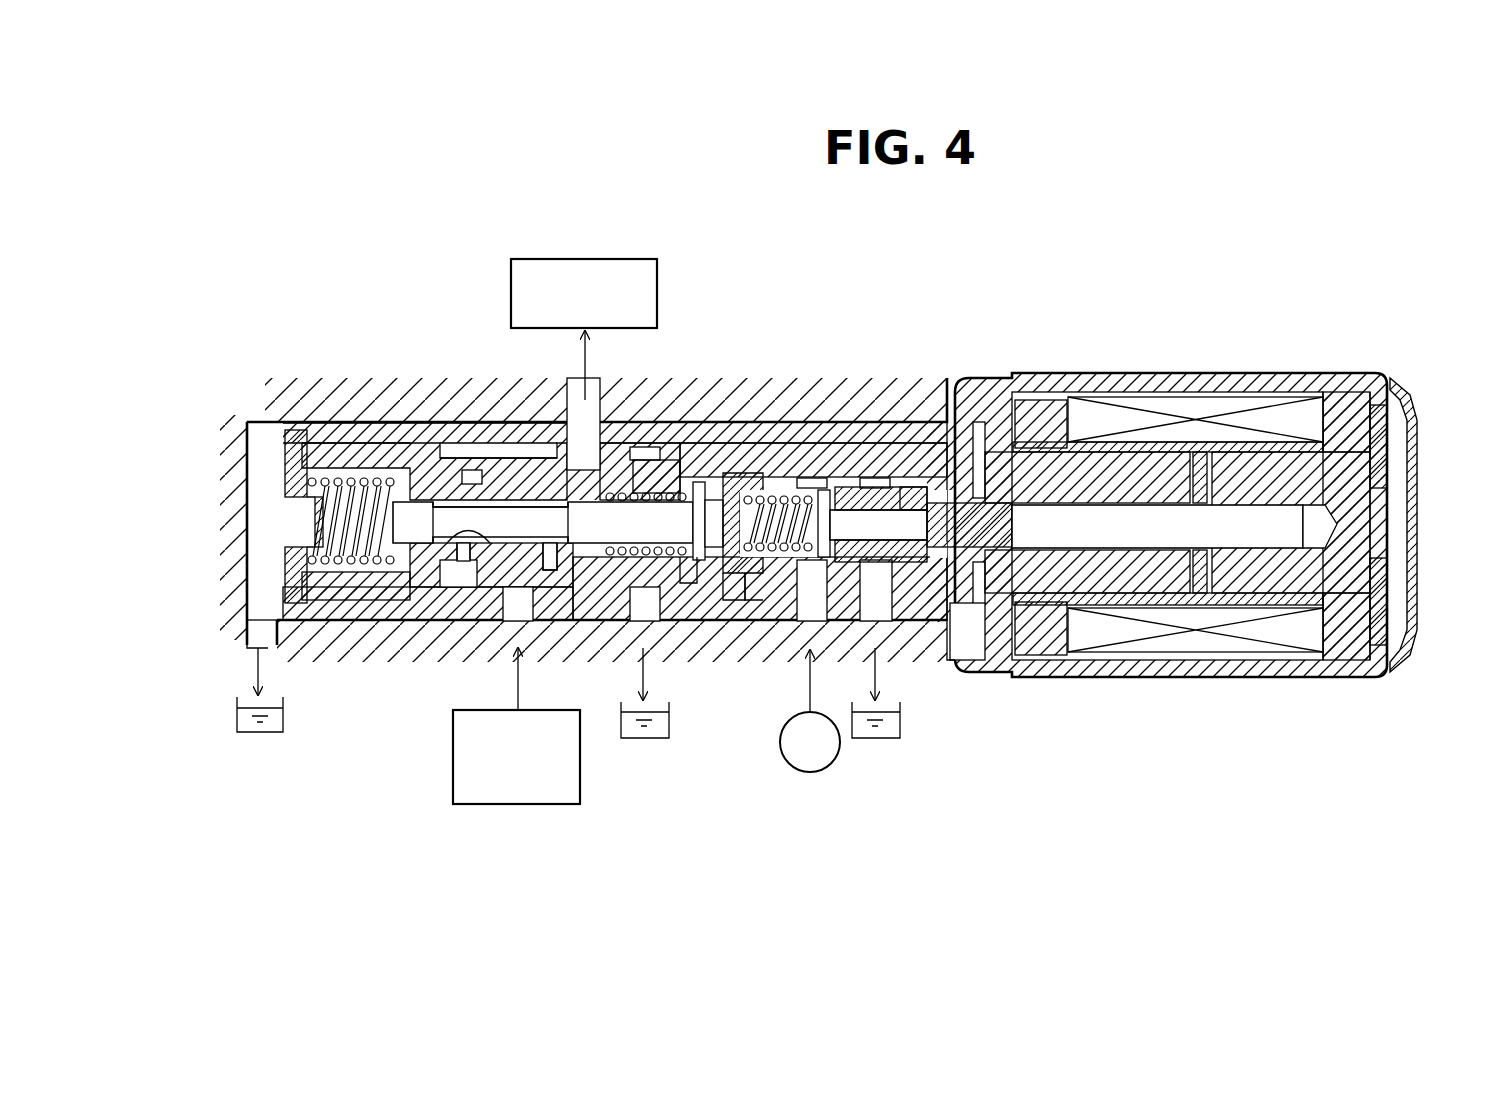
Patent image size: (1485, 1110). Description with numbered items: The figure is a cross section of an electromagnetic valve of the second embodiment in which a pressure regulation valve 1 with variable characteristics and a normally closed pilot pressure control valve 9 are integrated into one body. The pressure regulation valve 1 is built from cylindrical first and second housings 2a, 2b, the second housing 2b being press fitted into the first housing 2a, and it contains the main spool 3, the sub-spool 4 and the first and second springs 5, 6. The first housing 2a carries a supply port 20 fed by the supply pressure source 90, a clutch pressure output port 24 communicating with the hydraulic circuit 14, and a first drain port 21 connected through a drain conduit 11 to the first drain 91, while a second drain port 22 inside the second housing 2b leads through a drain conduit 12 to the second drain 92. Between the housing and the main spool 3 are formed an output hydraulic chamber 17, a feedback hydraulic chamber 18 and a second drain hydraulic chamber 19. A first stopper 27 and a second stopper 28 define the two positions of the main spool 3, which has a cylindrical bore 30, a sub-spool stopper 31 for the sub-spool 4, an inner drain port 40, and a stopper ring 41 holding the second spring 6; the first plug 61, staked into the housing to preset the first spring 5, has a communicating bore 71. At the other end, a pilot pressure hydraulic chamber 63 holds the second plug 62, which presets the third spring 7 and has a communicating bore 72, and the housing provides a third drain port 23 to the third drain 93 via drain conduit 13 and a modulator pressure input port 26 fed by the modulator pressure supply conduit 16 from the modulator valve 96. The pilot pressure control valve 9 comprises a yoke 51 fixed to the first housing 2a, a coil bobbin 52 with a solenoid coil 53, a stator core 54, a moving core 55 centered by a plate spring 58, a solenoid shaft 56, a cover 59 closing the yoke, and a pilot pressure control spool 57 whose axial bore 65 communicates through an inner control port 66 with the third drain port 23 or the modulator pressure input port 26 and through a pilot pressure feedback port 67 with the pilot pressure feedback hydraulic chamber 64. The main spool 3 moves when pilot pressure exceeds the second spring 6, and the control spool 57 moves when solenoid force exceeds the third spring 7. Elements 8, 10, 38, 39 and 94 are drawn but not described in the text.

The pressure regulation valve 1 is at (245, 312).
The first housing 2a is at (476, 420).
The second housing 2b is at (348, 420).
The main spool 3 is at (665, 460).
The sub-spool 4 is at (694, 480).
The first spring 5 is at (332, 604).
The second spring 6 is at (662, 612).
The third spring 7 is at (822, 488).
The flange 8 is at (935, 660).
The pilot pressure control valve 9 is at (1202, 474).
The spool neck 10 is at (515, 695).
The drain conduit 11 is at (670, 710).
The drain conduit 12 is at (255, 666).
The drain conduit 13 is at (892, 712).
The output conduit 14 is at (592, 365).
The modulator pressure supply conduit 16 is at (832, 725).
The output hydraulic chamber 17 is at (556, 450).
The feedback hydraulic chamber 18 is at (455, 612).
The second drain hydraulic chamber 19 is at (300, 568).
The supply port 20 is at (529, 641).
The first drain port 21 is at (604, 612).
The second drain port 22 is at (255, 628).
The third drain port 23 is at (880, 635).
The clutch pressure output port 24 is at (592, 405).
The modulator pressure input port 26 is at (818, 630).
The first stopper 27 is at (700, 606).
The second stopper 28 is at (430, 455).
The cylindrical bore 30 is at (425, 605).
The sub-spool stopper 31 is at (741, 472).
The land 38 is at (572, 610).
The orifice 39 is at (480, 604).
The inner drain port 40 is at (378, 560).
The stopper ring 41 is at (714, 498).
The yoke 51 is at (1030, 385).
The coil bobbin 52 is at (1240, 470).
The solenoid coil 53 is at (1190, 408).
The stator core 54 is at (1040, 420).
The moving core 55 is at (1350, 455).
The solenoid shaft 56 is at (1122, 480).
The pilot pressure control spool 57 is at (876, 478).
The plate spring 58 is at (1380, 430).
The cover 59 is at (1410, 488).
The first plug 61 is at (292, 430).
The second plug 62 is at (735, 600).
The pilot pressure hydraulic chamber 63 is at (764, 600).
The pilot pressure feedback hydraulic chamber 64 is at (972, 503).
The axial bore 65 is at (866, 488).
The inner control port 66 is at (814, 478).
The pilot pressure feedback port 67 is at (914, 488).
The communicating bore 71 is at (316, 518).
The communicating bore 72 is at (790, 496).
The supply pressure source 90 is at (512, 805).
The first drain 91 is at (645, 740).
The second drain 92 is at (260, 734).
The third drain 93 is at (878, 740).
The hydraulic servo 94 is at (584, 258).
The modulator valve 96 is at (810, 773).